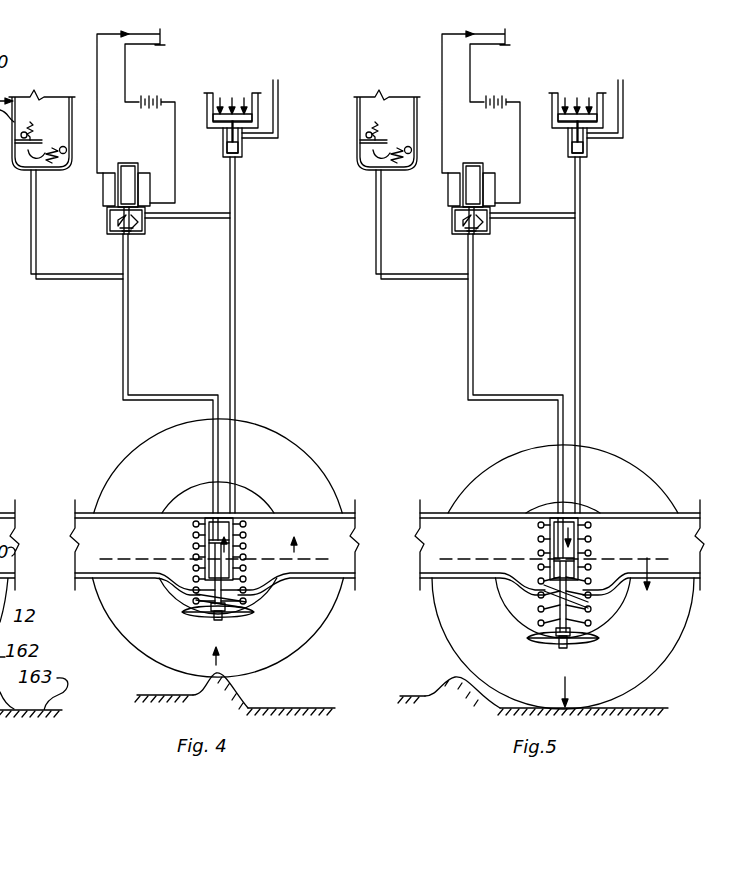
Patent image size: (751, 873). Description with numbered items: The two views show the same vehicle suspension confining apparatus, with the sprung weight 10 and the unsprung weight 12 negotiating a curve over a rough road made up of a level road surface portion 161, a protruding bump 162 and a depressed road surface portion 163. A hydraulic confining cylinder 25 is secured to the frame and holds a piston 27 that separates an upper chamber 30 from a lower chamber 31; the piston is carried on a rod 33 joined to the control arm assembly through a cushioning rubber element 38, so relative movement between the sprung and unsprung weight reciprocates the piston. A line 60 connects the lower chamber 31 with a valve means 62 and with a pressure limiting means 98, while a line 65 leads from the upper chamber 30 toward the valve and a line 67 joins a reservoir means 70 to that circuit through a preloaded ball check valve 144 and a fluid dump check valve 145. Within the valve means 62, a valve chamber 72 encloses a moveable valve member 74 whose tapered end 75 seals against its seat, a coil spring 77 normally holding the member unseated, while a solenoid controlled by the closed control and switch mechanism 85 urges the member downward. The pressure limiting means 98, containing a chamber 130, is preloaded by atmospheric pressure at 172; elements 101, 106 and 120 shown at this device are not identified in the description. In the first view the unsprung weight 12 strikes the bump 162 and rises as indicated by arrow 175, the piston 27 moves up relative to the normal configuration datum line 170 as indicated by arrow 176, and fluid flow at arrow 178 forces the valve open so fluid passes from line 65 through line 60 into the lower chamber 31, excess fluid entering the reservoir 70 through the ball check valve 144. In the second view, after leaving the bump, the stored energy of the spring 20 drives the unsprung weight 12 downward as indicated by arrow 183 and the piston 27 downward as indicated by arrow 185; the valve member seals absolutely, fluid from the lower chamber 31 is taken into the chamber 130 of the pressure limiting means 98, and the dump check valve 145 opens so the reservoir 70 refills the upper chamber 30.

In FIG. 4, the sprung weight 10 is at (92, 513).
In FIG. 5, the sprung weight 10 is at (442, 513).
In FIG. 4, the unsprung weight 12 is at (342, 640).
In FIG. 5, the unsprung weight 12 is at (694, 627).
In FIG. 4, the left front spring 20 is at (246, 533).
In FIG. 5, the left front spring 20 is at (588, 540).
In FIG. 4, the hydraulic confining cylinder 25 is at (193, 537).
In FIG. 5, the hydraulic confining cylinder 25 is at (540, 538).
In FIG. 4, the piston 27 is at (209, 557).
In FIG. 5, the piston 27 is at (554, 561).
In FIG. 4, the upper chamber 30 is at (216, 517).
In FIG. 5, the upper chamber 30 is at (560, 516).
In FIG. 4, the lower chamber 31 is at (205, 588).
In FIG. 5, the lower chamber 31 is at (545, 587).
In FIG. 4, the rod 33 is at (246, 597).
In FIG. 5, the rod 33 is at (586, 600).
In FIG. 4, the rubber element 38 is at (203, 615).
In FIG. 5, the rubber element 38 is at (558, 644).
In FIG. 4, the line 60 is at (236, 350).
In FIG. 5, the line 60 is at (600, 335).
In FIG. 4, the valve means 62 is at (107, 216).
In FIG. 5, the valve means 62 is at (442, 217).
In FIG. 4, the line 65 is at (129, 323).
In FIG. 5, the line 65 is at (515, 373).
In FIG. 4, the line 67 is at (78, 281).
In FIG. 5, the line 67 is at (422, 242).
In FIG. 5, the reservoir means 70 is at (376, 111).
In FIG. 4, the valve chamber 72 is at (140, 236).
In FIG. 5, the valve chamber 72 is at (504, 234).
In FIG. 4, the moveable valve member 74 is at (127, 172).
In FIG. 5, the moveable valve member 74 is at (471, 171).
In FIG. 4, the tapered end 75 is at (117, 234).
In FIG. 5, the tapered end 75 is at (442, 246).
In FIG. 4, the coil spring 77 is at (114, 222).
In FIG. 5, the coil spring 77 is at (429, 229).
In FIG. 4, the control and switch mechanism 85 is at (163, 41).
In FIG. 5, the control and switch mechanism 85 is at (496, 112).
In FIG. 4, the pressure limiting means 98 is at (207, 110).
In FIG. 5, the pressure limiting means 98 is at (558, 99).
In FIG. 4, the piston 101 is at (244, 149).
In FIG. 5, the piston 101 is at (607, 147).
In FIG. 4, the diaphragm plate 106 is at (212, 128).
In FIG. 5, the diaphragm plate 106 is at (560, 142).
In FIG. 4, the conduit 120 is at (277, 82).
In FIG. 5, the conduit 120 is at (614, 89).
In FIG. 5, the chamber 130 is at (557, 164).
In FIG. 5, the preloaded ball check valve 144 is at (354, 127).
In FIG. 4, the fluid dump check valve 145 is at (35, 150).
In FIG. 5, the fluid dump check valve 145 is at (391, 172).
In FIG. 4, the level road surface portion 161 is at (143, 695).
In FIG. 5, the level road surface portion 161 is at (414, 696).
In FIG. 4, the protruding bump 162 is at (263, 685).
In FIG. 5, the protruding bump 162 is at (450, 670).
In FIG. 4, the depressed road surface portion 163 is at (295, 708).
In FIG. 5, the depressed road surface portion 163 is at (648, 708).
In FIG. 4, the normal configuration datum line 170 is at (298, 556).
In FIG. 5, the normal configuration datum line 170 is at (630, 573).
In FIG. 4, the atmospheric pressure preload 172 is at (232, 98).
In FIG. 5, the atmospheric pressure preload 172 is at (568, 83).
In FIG. 4, the arrow 175 is at (216, 662).
In FIG. 4, the arrow 176 is at (296, 548).
In FIG. 4, the arrow 178 is at (150, 222).
In FIG. 5, the arrow 183 is at (568, 683).
In FIG. 5, the arrow 185 is at (664, 585).